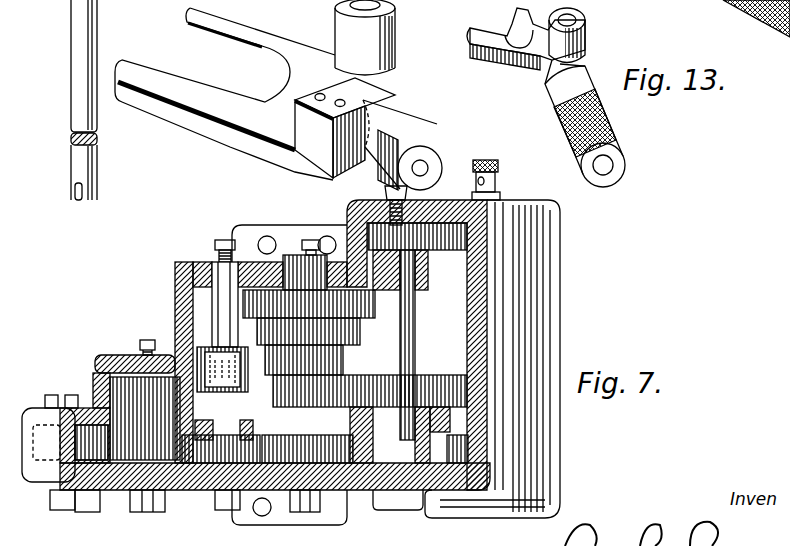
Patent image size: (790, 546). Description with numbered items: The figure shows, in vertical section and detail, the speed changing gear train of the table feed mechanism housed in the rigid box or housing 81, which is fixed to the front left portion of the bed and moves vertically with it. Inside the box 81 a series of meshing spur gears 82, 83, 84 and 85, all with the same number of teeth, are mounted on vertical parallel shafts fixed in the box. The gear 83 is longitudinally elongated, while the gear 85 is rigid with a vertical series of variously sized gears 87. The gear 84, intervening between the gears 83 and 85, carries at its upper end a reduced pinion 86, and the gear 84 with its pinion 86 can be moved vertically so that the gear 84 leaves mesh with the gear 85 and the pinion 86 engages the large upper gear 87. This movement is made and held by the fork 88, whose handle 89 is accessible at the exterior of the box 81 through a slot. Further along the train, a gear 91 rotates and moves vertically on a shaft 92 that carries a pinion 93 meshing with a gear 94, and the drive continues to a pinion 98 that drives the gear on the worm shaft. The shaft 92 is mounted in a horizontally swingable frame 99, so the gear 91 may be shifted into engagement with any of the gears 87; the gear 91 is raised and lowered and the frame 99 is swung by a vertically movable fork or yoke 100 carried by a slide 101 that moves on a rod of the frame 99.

In FIG. 7, the box or housing 81 is at (487, 330).
In FIG. 7, the gear 82 is at (57, 480).
In FIG. 7, the gear 83 is at (118, 398).
In FIG. 7, the gear 84 is at (257, 443).
In FIG. 7, the gear 85 is at (299, 443).
In FIG. 7, the pinion 86 is at (217, 350).
In FIG. 7, the variously sized gears 87 is at (383, 370).
In FIG. 13, the fork 88 is at (517, 60).
In FIG. 7, the fork 88 is at (203, 422).
In FIG. 13, the handle 89 is at (614, 120).
In FIG. 7, the gear 91 is at (365, 378).
In FIG. 7, the shaft 92 is at (411, 318).
In FIG. 7, the pinion 93 is at (423, 268).
In FIG. 7, the gear 94 is at (466, 237).
In FIG. 7, the pinion 98 is at (466, 450).
In FIG. 7, the swingable frame 99 is at (430, 281).
In FIG. 13, the fork or yoke 100 is at (222, 140).
In FIG. 7, the fork or yoke 100 is at (487, 417).
In FIG. 13, the slide 101 is at (392, 50).